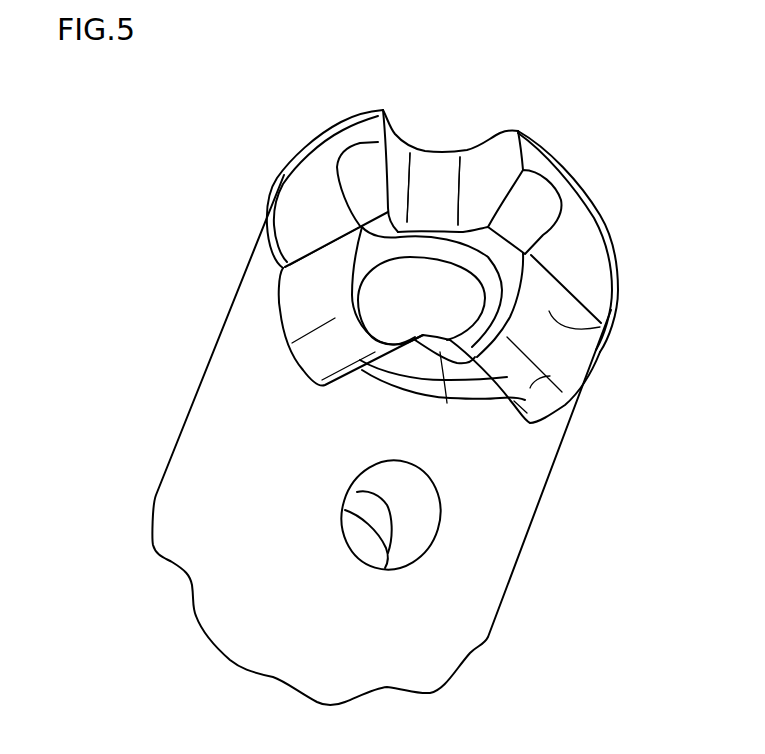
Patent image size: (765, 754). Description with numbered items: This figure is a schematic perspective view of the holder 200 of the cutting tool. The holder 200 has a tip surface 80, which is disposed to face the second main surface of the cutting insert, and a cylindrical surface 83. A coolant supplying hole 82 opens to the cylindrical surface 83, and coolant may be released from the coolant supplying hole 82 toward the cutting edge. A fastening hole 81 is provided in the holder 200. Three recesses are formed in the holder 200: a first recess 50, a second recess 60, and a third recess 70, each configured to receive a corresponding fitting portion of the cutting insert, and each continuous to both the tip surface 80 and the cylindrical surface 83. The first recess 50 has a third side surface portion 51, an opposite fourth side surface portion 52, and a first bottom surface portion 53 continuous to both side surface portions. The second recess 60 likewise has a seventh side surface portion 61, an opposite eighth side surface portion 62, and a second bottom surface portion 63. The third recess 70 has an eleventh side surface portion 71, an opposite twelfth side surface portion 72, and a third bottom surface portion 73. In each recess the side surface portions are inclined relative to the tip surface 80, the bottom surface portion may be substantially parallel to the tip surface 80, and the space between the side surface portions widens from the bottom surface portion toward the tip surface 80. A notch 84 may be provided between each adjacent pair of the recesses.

The holder 200 is at (596, 149).
The first recess 50 is at (159, 285).
The third side surface portion 51 is at (316, 282).
The fourth side surface portion 52 is at (372, 354).
The first bottom surface portion 53 is at (333, 345).
The second recess 60 is at (656, 314).
The seventh side surface portion 61 is at (490, 367).
The eighth side surface portion 62 is at (600, 327).
The second bottom surface portion 63 is at (537, 377).
The third recess 70 is at (510, 76).
The eleventh side surface portion 71 is at (498, 177).
The twelfth side surface portion 72 is at (400, 140).
The third bottom surface portion 73 is at (435, 186).
The tip surface 80 is at (308, 206).
The fastening hole 81 is at (447, 325).
The coolant supplying hole 82 is at (404, 527).
The cylindrical surface 83 is at (500, 506).
The notch 84 is at (363, 182).